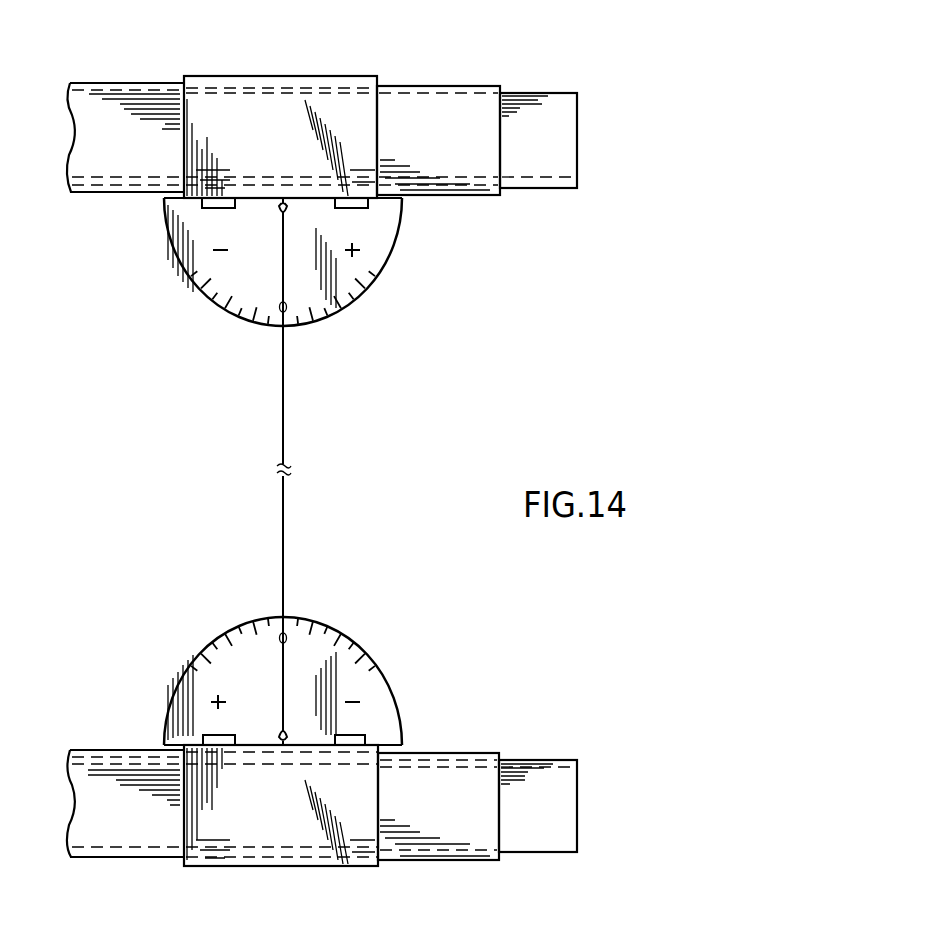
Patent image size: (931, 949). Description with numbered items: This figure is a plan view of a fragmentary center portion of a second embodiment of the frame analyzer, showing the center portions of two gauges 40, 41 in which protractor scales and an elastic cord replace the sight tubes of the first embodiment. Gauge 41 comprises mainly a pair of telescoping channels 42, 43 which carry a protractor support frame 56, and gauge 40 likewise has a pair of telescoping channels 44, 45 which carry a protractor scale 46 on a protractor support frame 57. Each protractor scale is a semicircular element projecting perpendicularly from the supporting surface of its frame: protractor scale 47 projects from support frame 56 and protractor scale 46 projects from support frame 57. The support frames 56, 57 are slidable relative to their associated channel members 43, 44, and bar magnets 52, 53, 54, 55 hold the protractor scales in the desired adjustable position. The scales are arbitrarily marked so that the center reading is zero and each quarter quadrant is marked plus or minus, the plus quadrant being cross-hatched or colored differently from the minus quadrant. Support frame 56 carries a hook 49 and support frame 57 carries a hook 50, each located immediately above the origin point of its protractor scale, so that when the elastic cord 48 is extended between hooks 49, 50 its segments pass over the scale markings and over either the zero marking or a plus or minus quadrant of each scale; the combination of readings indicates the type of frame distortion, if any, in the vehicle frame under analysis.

The gauge 40 is at (478, 748).
The gauge 41 is at (522, 210).
The telescoping channel 42 is at (565, 135).
The telescoping channel 43 is at (416, 105).
The telescoping channel 44 is at (443, 830).
The telescoping channel 45 is at (545, 838).
The protractor scale 46 is at (373, 680).
The protractor scale 47 is at (384, 280).
The elastic cord 48 is at (284, 395).
The hook 49 is at (279, 207).
The hook 50 is at (278, 731).
The bar magnet 52 is at (206, 736).
The bar magnet 53 is at (366, 736).
The bar magnet 54 is at (206, 209).
The bar magnet 55 is at (366, 209).
The protractor support frame 56 is at (237, 105).
The protractor support frame 57 is at (254, 835).